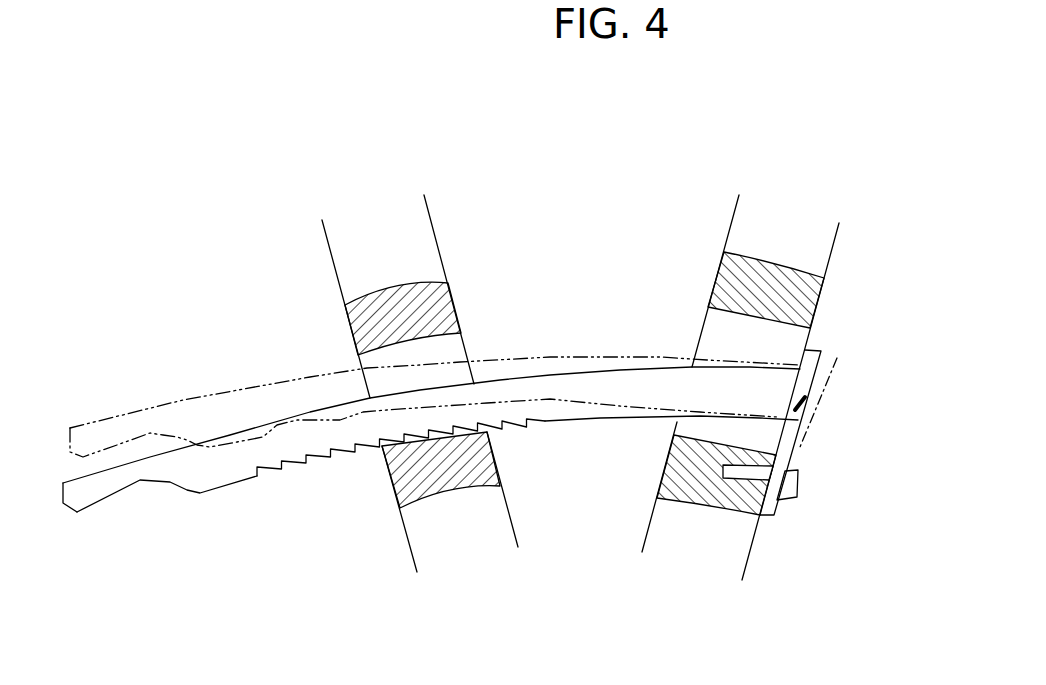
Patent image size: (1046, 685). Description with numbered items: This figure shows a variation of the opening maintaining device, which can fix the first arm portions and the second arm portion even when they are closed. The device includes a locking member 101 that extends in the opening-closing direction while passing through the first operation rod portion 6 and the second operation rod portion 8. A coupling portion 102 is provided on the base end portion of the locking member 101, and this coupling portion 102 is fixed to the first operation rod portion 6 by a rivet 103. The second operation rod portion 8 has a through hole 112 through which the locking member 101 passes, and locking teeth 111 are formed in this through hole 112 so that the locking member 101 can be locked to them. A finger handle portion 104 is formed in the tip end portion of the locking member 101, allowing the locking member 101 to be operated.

The first operation rod portion 6 is at (722, 255).
The second operation rod portion 8 is at (437, 235).
The locking member 101 is at (661, 360).
The coupling portion 102 is at (823, 390).
The rivet 103 is at (790, 495).
The finger handle portion 104 is at (123, 491).
The locking teeth 111 is at (465, 432).
The through hole 112 is at (387, 382).